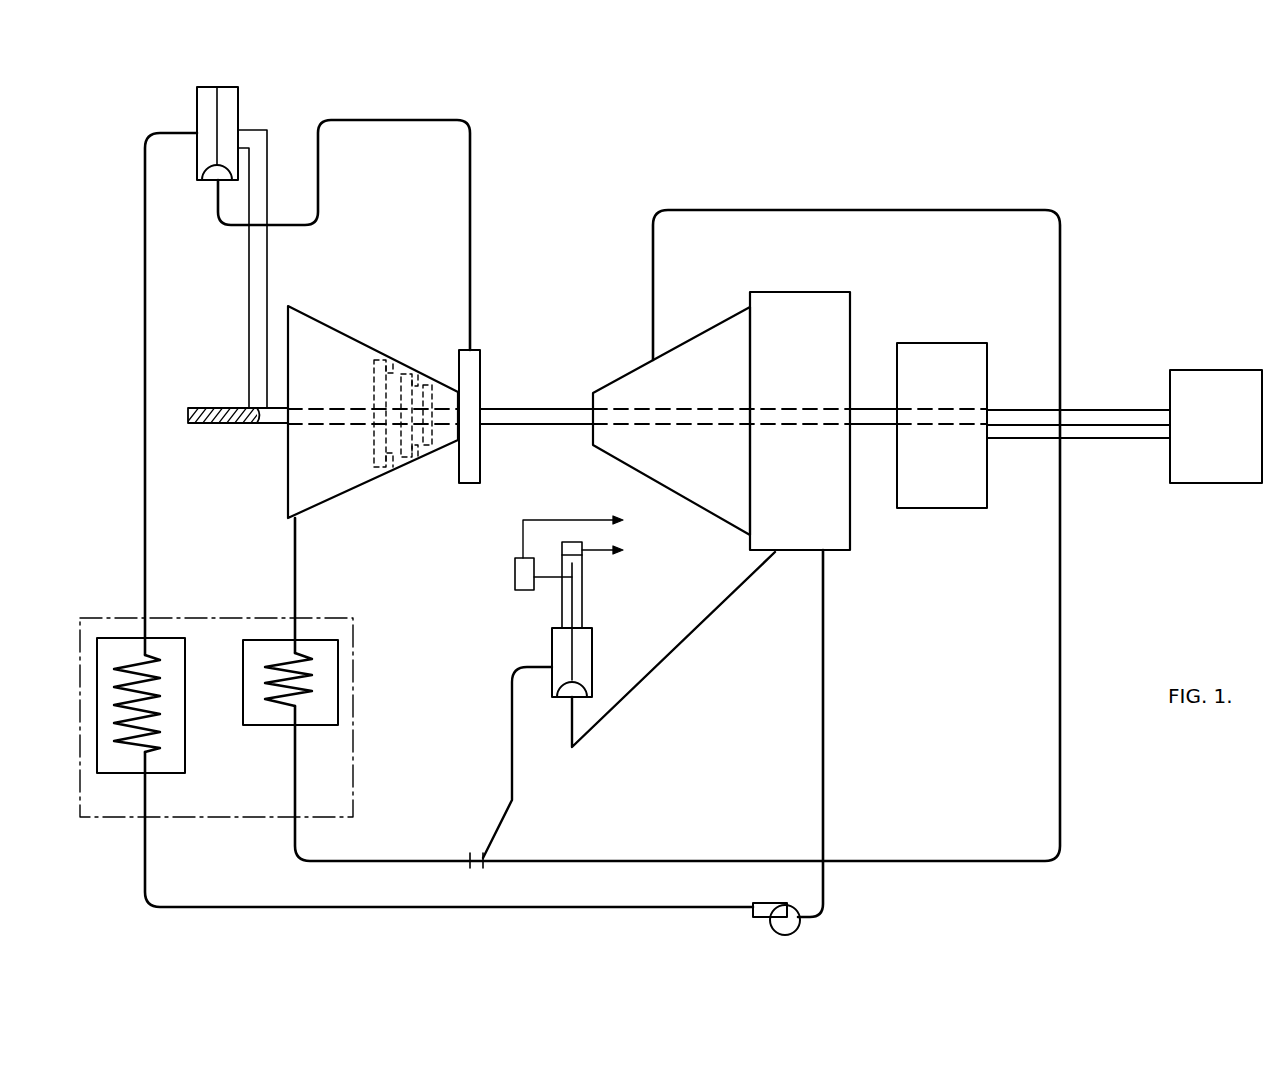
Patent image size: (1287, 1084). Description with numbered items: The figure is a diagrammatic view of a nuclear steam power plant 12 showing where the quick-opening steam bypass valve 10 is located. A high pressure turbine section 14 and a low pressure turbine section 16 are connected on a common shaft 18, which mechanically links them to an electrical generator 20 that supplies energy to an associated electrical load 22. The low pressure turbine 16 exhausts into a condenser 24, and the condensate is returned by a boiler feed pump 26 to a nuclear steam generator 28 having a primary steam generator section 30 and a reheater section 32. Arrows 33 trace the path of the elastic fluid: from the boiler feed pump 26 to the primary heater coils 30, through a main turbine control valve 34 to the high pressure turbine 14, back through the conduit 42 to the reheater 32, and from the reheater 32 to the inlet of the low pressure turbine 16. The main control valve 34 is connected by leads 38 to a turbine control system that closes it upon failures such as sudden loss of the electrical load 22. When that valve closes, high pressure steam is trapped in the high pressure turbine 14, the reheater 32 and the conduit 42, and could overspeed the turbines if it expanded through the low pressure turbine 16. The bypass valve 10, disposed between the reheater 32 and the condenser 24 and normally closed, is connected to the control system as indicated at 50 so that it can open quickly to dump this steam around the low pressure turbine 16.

The quick-opening bypass valve 10 is at (629, 647).
The nuclear steam power plant 12 is at (908, 644).
The high pressure turbine section 14 is at (362, 482).
The low pressure turbine section 16 is at (690, 500).
The common shaft 18 is at (540, 410).
The electrical generator 20 is at (950, 503).
The electrical load 22 is at (1232, 441).
The condenser 24 is at (813, 512).
The boiler feed pump 26 is at (795, 930).
The steam generator 28 is at (229, 751).
The primary steam generator section 30 is at (132, 773).
The reheater section 32 is at (338, 690).
The arrows 33 is at (407, 128).
The main turbine control valve 34 is at (238, 101).
The leads 38 is at (267, 272).
The conduit 42 is at (297, 577).
The connection to turbine control system 50 is at (618, 525).